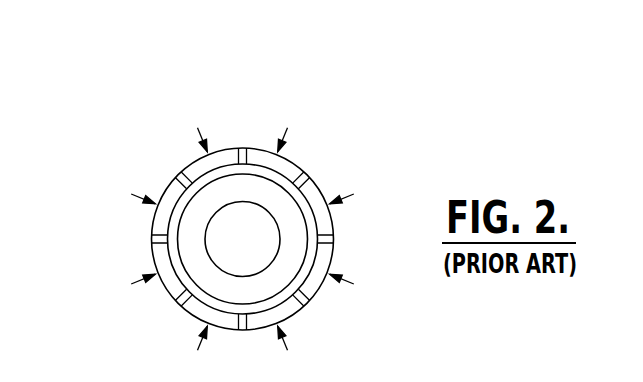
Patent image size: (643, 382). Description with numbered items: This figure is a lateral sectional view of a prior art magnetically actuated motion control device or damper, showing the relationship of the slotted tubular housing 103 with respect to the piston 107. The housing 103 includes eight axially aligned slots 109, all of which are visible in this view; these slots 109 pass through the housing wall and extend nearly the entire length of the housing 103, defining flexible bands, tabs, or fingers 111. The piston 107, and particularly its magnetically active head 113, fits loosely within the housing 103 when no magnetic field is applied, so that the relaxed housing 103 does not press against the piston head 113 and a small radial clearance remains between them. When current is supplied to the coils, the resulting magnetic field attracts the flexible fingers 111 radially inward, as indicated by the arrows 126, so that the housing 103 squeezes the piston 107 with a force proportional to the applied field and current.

The tubular housing 103 is at (325, 258).
The piston 107 is at (179, 279).
The axially aligned slot 109 is at (242, 148).
The flexible fingers 111 is at (162, 222).
The piston head 113 is at (187, 260).
The arrows 126 is at (131, 194).